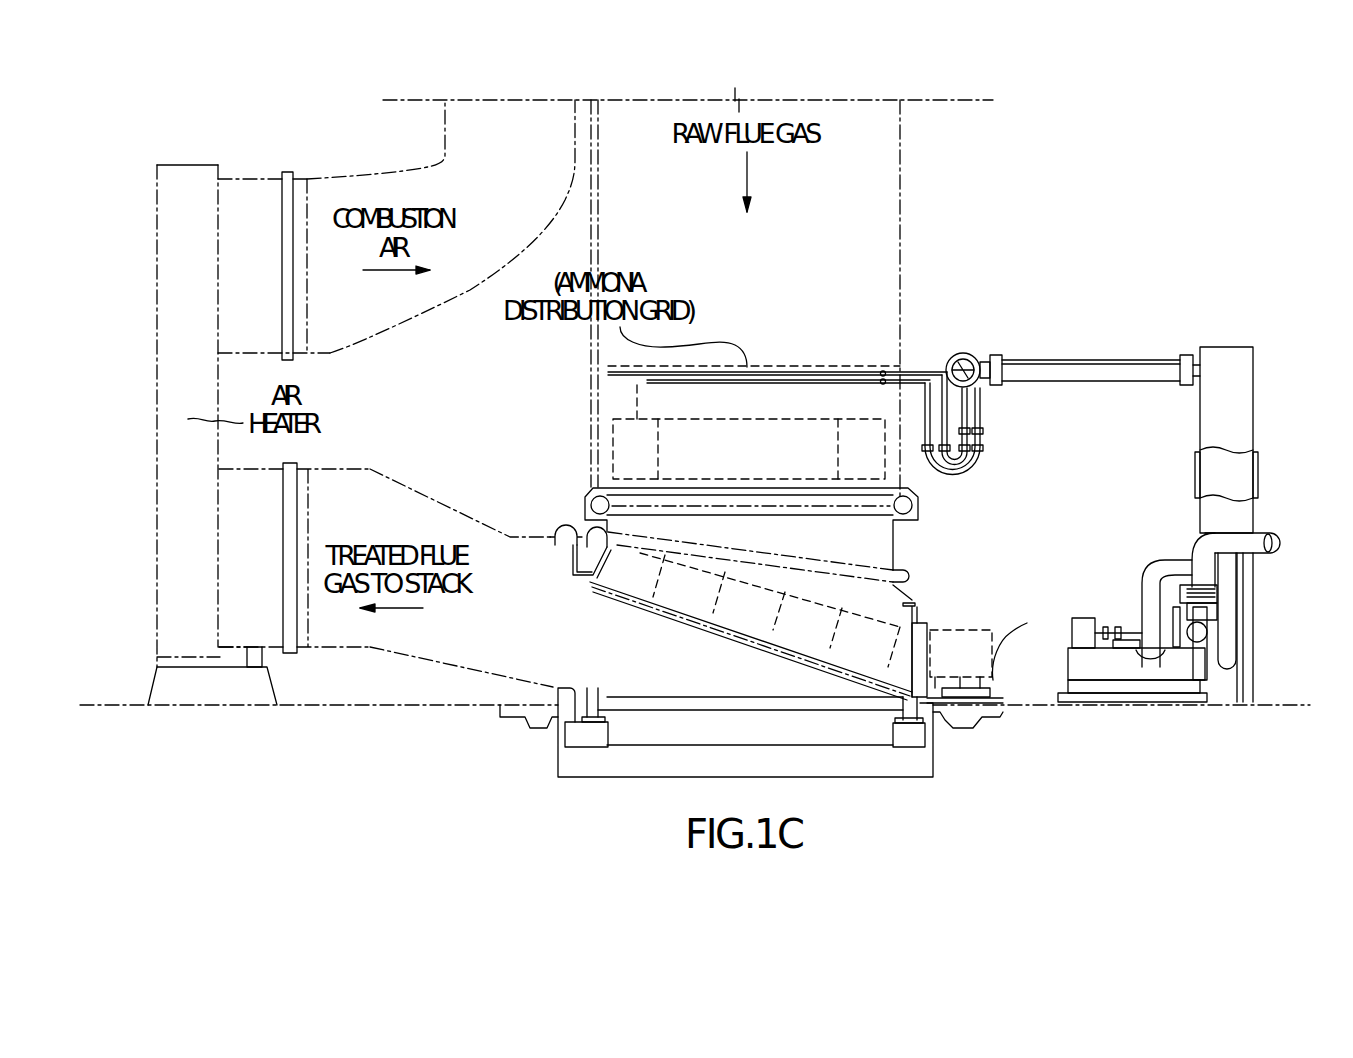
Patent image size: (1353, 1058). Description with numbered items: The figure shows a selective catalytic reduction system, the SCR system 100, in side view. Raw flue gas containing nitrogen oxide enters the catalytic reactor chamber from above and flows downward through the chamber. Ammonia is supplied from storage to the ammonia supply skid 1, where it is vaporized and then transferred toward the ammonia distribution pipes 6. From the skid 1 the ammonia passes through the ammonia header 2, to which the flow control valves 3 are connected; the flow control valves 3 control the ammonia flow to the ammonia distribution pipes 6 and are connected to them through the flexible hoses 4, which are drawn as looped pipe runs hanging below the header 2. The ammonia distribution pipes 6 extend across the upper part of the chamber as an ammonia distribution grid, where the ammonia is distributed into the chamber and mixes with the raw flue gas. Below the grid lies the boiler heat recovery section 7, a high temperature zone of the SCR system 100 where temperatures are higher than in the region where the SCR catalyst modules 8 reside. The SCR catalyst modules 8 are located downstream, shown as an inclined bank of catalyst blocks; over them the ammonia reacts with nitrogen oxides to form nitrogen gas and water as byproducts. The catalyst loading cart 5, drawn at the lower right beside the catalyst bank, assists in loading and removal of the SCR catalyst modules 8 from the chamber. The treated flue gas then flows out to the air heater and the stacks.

The SCR system 100 is at (1003, 154).
The ammonia supply skid 1 is at (1167, 524).
The ammonia header 2 is at (968, 355).
The flow control valves 3 is at (1107, 349).
The flexible hoses 4 is at (978, 471).
The catalyst loading cart 5 is at (1056, 703).
The ammonia distribution pipes 6 is at (795, 325).
The boiler heat recovery section 7 is at (652, 432).
The SCR catalyst modules 8 is at (717, 616).